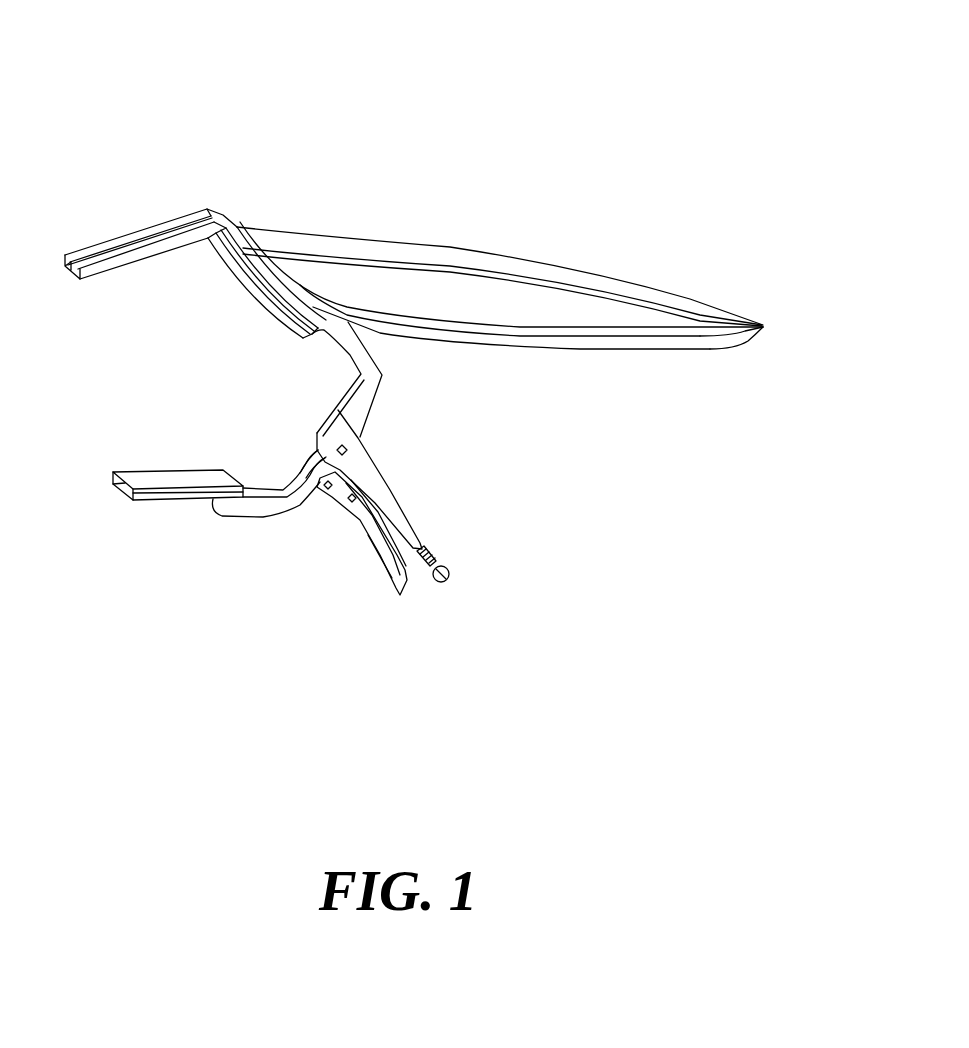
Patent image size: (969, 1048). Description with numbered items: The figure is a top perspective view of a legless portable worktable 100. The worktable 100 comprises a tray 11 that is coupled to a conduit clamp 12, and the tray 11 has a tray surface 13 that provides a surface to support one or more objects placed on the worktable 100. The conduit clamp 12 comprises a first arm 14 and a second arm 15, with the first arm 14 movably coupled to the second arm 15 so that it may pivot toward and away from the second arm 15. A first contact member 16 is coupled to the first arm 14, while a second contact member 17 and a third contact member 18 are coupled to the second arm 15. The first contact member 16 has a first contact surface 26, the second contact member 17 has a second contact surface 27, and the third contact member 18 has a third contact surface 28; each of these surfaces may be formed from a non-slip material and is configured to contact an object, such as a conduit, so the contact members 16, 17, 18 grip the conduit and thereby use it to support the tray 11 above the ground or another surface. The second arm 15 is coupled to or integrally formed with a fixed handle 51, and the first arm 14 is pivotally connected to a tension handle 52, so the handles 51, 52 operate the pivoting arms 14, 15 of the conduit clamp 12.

The legless portable worktable 100 is at (610, 60).
The conduit clamp 12 is at (170, 165).
The second contact member 17 is at (142, 238).
The second contact surface 27 is at (146, 264).
The third contact member 18 is at (287, 295).
The third contact surface 28 is at (257, 287).
The tray surface 13 is at (457, 290).
The tray 11 is at (545, 307).
The second arm 15 is at (375, 382).
The fixed handle 51 is at (390, 507).
The tension handle 52 is at (370, 523).
The first arm 14 is at (288, 503).
The first contact surface 26 is at (178, 482).
The first contact member 16 is at (188, 498).